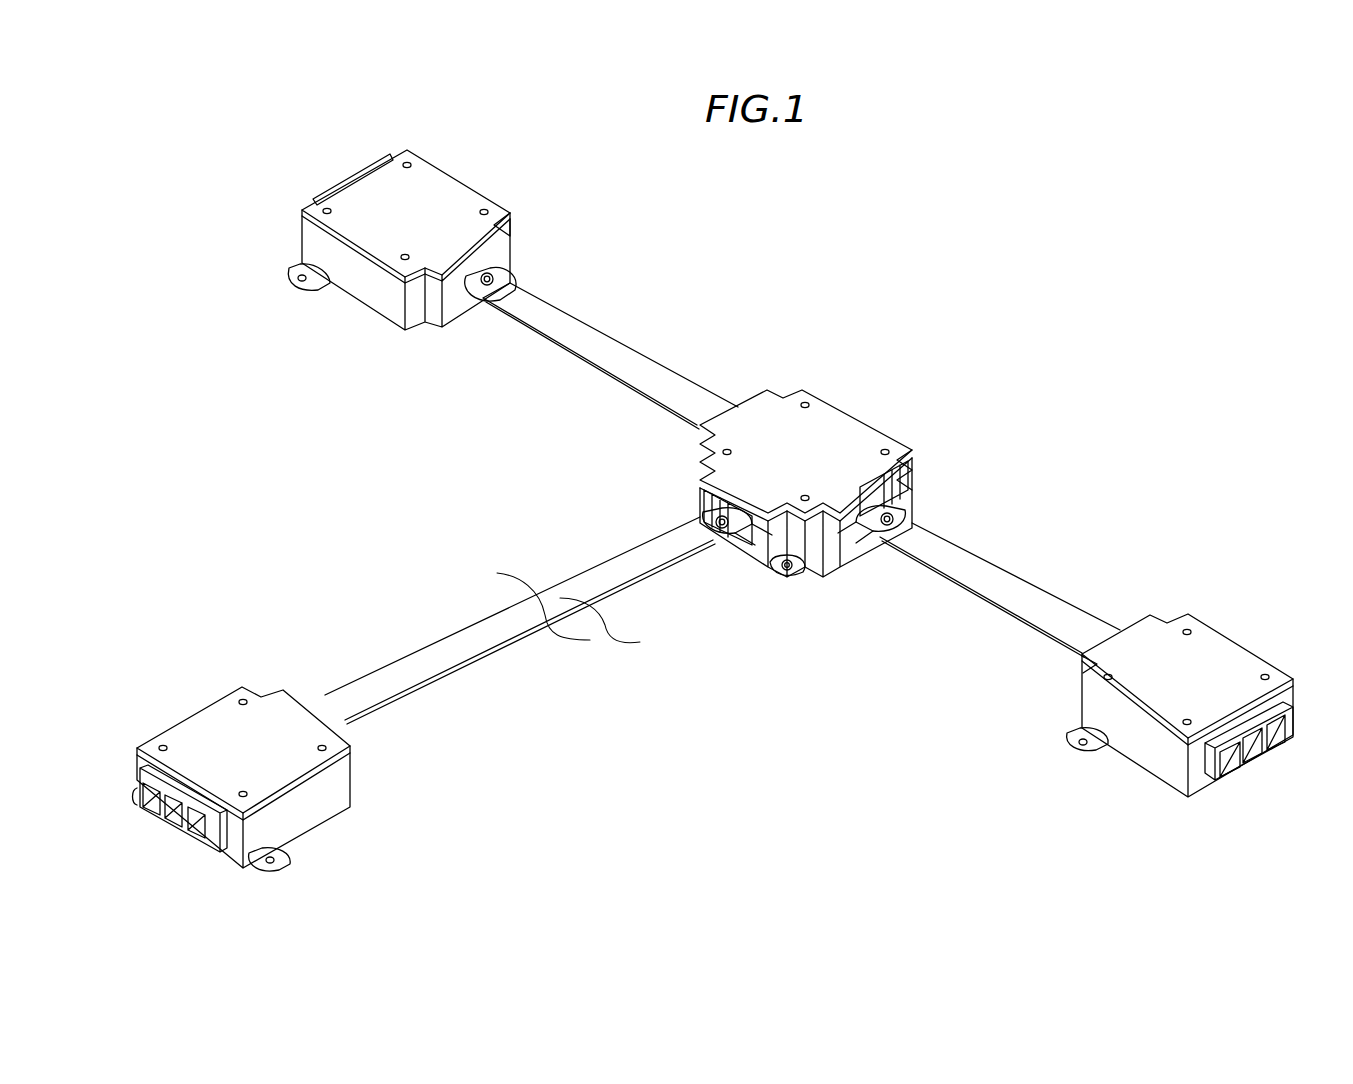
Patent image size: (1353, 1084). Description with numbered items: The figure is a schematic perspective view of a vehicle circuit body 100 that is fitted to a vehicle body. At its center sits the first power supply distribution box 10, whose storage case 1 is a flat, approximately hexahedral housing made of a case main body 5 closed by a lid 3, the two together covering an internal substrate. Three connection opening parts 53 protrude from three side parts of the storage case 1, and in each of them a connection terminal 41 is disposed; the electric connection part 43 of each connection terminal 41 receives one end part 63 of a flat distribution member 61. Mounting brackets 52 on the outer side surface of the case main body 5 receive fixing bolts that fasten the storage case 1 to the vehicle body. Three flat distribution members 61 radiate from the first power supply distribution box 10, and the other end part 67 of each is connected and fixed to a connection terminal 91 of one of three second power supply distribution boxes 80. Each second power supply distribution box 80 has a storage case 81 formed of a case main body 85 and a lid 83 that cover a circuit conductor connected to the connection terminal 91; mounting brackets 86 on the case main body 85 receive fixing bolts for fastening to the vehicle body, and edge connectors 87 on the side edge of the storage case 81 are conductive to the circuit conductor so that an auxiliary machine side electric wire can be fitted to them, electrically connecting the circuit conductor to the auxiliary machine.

The vehicle circuit body 100 is at (1060, 350).
The first power supply distribution box 10 is at (800, 360).
The storage case 1 is at (898, 349).
The lid 3 is at (858, 420).
The case main body 5 is at (921, 461).
The connection terminal 41 is at (741, 506).
The electric connection part 43 is at (753, 546).
The mounting bracket 52 is at (800, 578).
The connection opening part 53 is at (697, 499).
The flat distribution member 61 is at (606, 321).
The one end part 63 is at (897, 539).
The other end part 67 is at (468, 314).
The second power supply distribution box 80 is at (489, 176).
The storage case 81 is at (187, 238).
The lid 83 is at (320, 235).
The case main body 85 is at (360, 284).
The mounting bracket 86 is at (290, 286).
The edge connector 87 is at (388, 153).
The connection terminal 91 is at (497, 262).